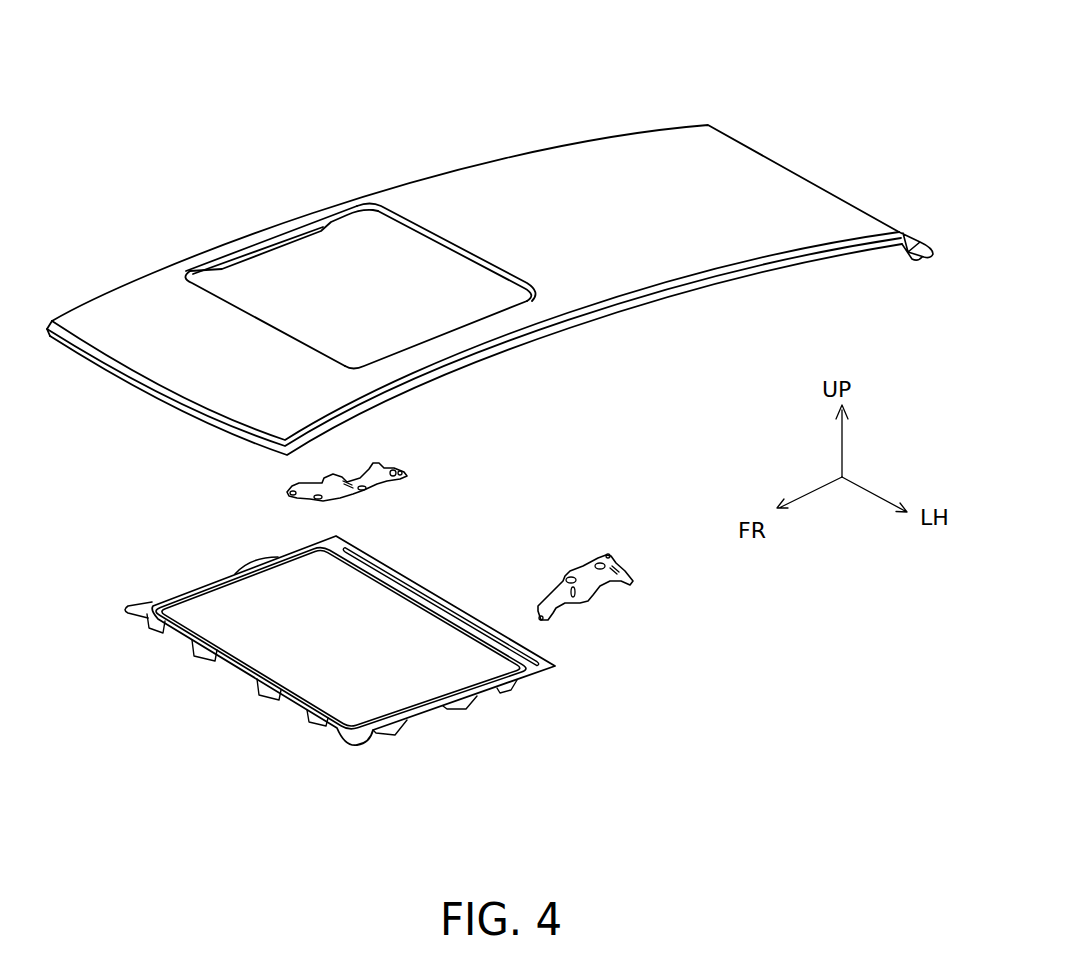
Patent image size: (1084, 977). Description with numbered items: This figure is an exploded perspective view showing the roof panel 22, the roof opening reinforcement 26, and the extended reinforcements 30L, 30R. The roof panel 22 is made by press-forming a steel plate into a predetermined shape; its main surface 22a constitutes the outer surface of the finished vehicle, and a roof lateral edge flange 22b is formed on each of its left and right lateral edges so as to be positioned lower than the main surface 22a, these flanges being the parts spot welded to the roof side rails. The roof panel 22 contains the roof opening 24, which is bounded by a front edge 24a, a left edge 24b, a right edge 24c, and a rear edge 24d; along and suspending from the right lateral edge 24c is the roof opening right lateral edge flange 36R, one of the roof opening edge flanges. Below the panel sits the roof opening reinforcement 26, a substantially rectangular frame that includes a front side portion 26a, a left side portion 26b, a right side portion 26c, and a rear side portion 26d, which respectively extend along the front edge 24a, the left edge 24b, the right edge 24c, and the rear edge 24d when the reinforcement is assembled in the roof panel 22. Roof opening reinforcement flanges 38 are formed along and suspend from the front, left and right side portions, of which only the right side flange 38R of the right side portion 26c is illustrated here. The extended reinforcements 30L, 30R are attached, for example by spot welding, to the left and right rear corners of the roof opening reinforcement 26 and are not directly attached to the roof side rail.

The roof panel 22 is at (490, 233).
The main surface 22a is at (690, 207).
The roof lateral edge flange 22b is at (673, 288).
The roof opening 24 is at (347, 232).
The front edge 24a is at (308, 348).
The left edge 24b is at (456, 333).
The right edge 24c is at (285, 233).
The rear edge 24d is at (437, 243).
The roof opening right lateral edge flange 36R is at (237, 258).
The roof opening reinforcement 26 is at (343, 635).
The front side portion 26a is at (233, 670).
The left side portion 26b is at (423, 707).
The right side portion 26c is at (223, 580).
The rear side portion 26d is at (425, 580).
The roof opening reinforcement flange 38 is at (341, 638).
The right side flange 38R is at (233, 578).
The extended reinforcement 30R is at (387, 463).
The extended reinforcement 30L is at (582, 575).